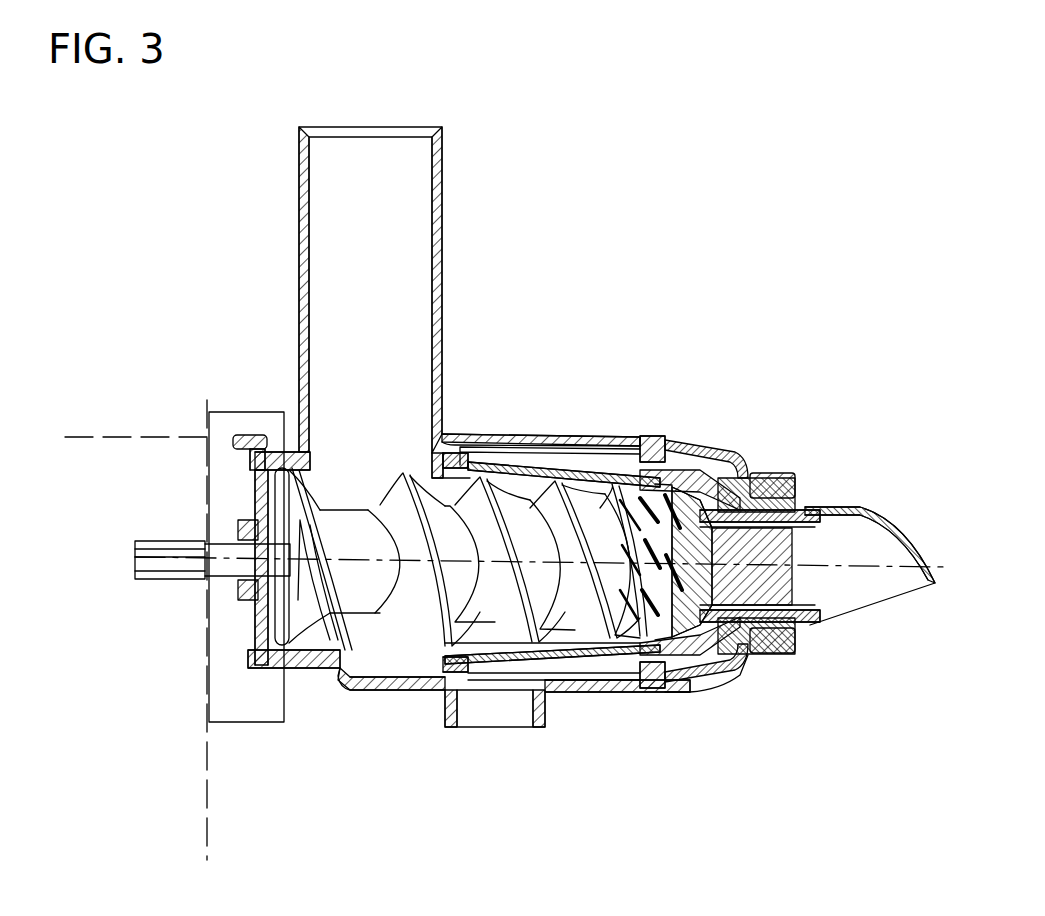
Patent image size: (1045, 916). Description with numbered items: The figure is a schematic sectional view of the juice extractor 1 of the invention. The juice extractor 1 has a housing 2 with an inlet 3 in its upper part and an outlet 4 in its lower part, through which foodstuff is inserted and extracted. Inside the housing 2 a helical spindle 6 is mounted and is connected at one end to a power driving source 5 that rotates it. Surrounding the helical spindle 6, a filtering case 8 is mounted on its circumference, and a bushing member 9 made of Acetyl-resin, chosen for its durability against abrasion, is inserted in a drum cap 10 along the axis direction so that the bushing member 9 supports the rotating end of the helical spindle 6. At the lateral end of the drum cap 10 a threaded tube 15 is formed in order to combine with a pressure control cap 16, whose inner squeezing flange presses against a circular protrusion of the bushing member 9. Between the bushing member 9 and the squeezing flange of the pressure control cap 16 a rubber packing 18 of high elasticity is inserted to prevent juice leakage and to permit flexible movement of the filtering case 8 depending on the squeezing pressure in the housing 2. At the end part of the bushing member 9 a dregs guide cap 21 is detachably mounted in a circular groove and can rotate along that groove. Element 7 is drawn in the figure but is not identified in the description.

The juice extractor 1 is at (682, 255).
The housing 2 is at (522, 435).
The inlet 3 is at (442, 292).
The outlet 4 is at (477, 715).
The power driving source 5 is at (143, 437).
The helical spindle 6 is at (400, 622).
The core plug 7 is at (790, 577).
The filtering case 8 is at (580, 470).
The bushing member 9 is at (800, 640).
The drum cap 10 is at (725, 470).
The threaded tube 15 is at (762, 475).
The pressure control cap 16 is at (795, 482).
The rubber packing 18 is at (745, 662).
The dregs guide cap 21 is at (860, 507).